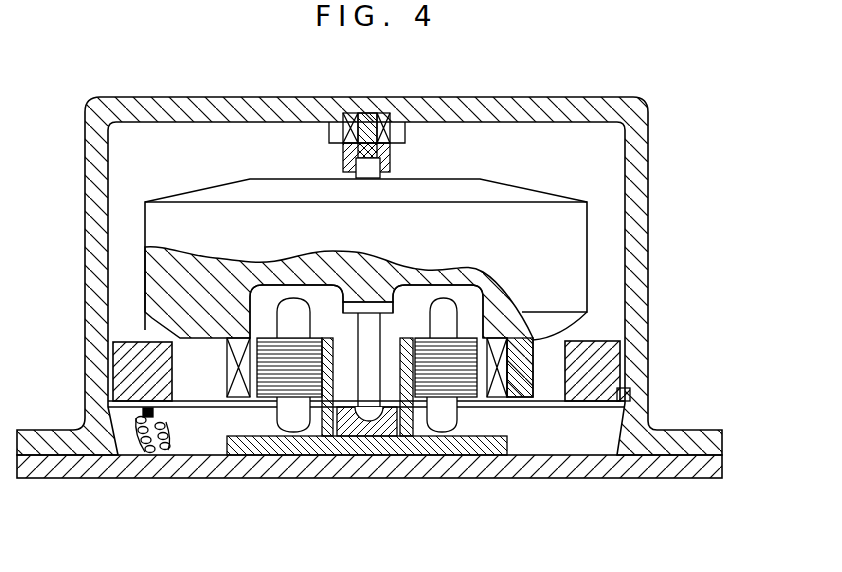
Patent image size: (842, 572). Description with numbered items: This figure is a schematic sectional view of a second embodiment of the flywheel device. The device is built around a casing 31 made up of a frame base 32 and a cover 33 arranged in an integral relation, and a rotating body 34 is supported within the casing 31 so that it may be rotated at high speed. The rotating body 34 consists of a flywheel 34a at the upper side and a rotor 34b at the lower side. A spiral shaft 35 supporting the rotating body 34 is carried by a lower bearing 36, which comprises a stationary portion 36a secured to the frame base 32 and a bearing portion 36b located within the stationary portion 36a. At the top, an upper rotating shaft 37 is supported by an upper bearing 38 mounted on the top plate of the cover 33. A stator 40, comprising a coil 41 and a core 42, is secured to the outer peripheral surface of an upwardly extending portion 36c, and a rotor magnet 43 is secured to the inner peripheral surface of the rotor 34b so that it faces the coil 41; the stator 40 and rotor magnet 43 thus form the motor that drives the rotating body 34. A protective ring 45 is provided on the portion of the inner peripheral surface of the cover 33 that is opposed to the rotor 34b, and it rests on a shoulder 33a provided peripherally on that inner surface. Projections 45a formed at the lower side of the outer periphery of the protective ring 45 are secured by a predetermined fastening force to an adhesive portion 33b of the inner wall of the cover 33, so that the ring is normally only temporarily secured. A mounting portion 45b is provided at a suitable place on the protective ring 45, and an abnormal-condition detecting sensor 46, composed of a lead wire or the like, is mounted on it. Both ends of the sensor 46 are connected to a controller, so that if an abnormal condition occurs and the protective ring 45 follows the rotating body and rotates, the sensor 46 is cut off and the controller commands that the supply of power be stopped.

The casing 31 is at (716, 215).
The frame base 32 is at (700, 470).
The cover 33 is at (645, 267).
The shoulder 33a is at (89, 456).
The adhesive portion 33b is at (110, 400).
The rotating body 34 is at (447, 267).
The flywheel 34a is at (577, 227).
The rotor 34b is at (557, 340).
The spiral shaft 35 is at (393, 422).
The lower bearing 36 is at (367, 422).
The stationary portion 36a is at (275, 450).
The bearing portion 36b is at (345, 448).
The upwardly extending portion 36c is at (402, 432).
The upper rotating shaft 37 is at (381, 176).
The upper bearing 38 is at (391, 152).
The stator 40 is at (372, 449).
The coil 41 is at (445, 400).
The core 42 is at (497, 398).
The rotor magnet 43 is at (533, 395).
The protective ring 45 is at (135, 342).
The projections 45a is at (115, 397).
The mounting portion 45b is at (150, 418).
The abnormal-condition detecting sensor 46 is at (158, 452).